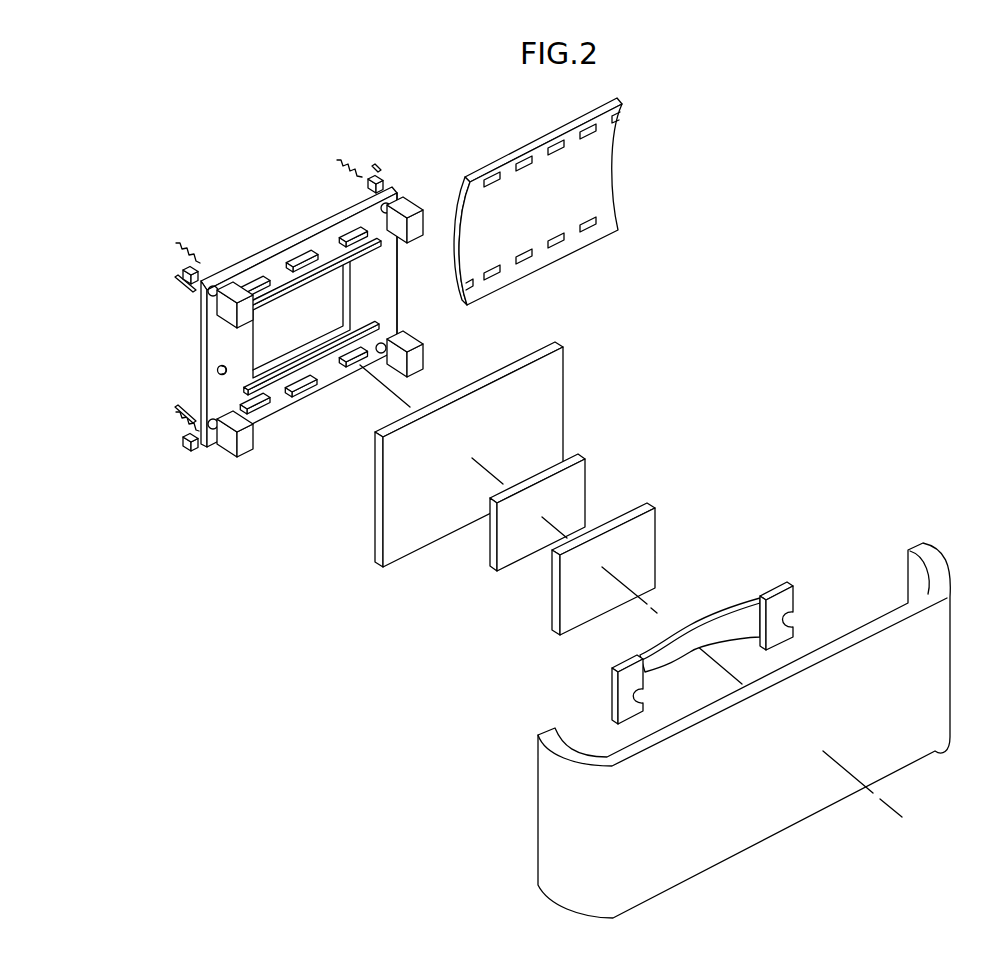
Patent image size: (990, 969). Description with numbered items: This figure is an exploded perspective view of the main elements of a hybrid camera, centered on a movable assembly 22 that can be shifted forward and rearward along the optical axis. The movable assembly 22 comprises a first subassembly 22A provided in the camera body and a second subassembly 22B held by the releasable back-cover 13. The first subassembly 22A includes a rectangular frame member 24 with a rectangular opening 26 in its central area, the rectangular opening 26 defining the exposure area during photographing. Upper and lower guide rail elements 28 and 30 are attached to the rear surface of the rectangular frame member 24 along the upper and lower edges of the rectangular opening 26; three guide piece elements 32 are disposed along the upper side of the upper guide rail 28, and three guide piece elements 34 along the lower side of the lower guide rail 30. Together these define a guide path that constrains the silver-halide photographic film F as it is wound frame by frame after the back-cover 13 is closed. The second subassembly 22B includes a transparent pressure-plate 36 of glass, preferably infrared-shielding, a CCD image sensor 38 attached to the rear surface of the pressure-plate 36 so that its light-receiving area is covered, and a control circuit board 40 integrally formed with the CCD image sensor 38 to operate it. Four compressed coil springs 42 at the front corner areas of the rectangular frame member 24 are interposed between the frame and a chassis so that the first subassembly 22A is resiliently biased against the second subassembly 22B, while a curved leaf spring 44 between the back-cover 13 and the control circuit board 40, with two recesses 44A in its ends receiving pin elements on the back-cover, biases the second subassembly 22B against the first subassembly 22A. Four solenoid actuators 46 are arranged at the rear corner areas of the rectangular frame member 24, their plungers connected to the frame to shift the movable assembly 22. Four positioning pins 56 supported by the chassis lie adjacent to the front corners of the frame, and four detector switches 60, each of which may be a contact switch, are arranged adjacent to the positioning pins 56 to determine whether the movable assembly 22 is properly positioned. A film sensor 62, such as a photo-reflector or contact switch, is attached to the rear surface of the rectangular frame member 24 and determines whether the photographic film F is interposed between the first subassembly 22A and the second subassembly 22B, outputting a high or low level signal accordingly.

The releasable back-cover 13 is at (550, 832).
The movable assembly 22 is at (267, 528).
The first subassembly 22A is at (117, 372).
The second subassembly 22B is at (566, 330).
The rectangular frame member 24 is at (372, 283).
The rectangular opening 26 is at (338, 344).
The upper guide rail element 28 is at (380, 256).
The lower guide rail element 30 is at (370, 320).
The guide piece elements 32 is at (258, 284).
The guide piece elements 34 is at (305, 397).
The transparent pressure-plate 36 is at (545, 415).
The CCD image sensor 38 is at (570, 500).
The control circuit board 40 is at (637, 558).
The compressed coil springs 42 is at (338, 163).
The leaf spring 44 is at (729, 608).
The recesses 44A is at (612, 700).
The solenoid actuators 46 is at (222, 312).
The positioning pins 56 is at (376, 178).
The detector switches 60 is at (370, 178).
The film sensor 62 is at (216, 371).
The silver-halide photographic film F is at (535, 141).